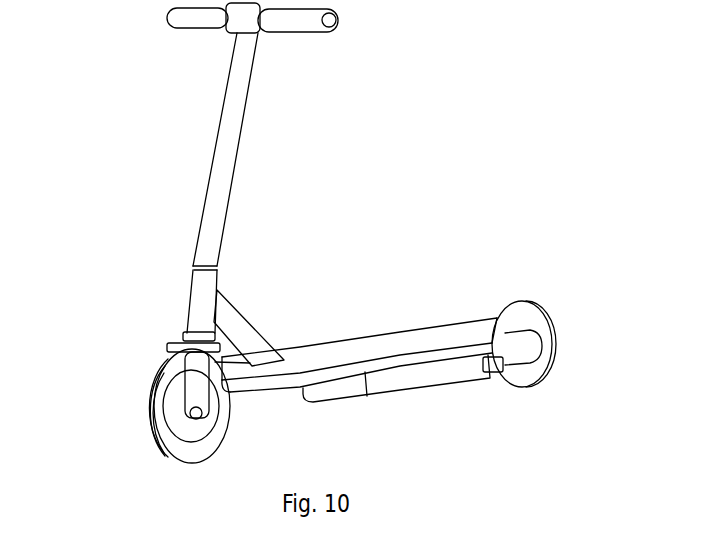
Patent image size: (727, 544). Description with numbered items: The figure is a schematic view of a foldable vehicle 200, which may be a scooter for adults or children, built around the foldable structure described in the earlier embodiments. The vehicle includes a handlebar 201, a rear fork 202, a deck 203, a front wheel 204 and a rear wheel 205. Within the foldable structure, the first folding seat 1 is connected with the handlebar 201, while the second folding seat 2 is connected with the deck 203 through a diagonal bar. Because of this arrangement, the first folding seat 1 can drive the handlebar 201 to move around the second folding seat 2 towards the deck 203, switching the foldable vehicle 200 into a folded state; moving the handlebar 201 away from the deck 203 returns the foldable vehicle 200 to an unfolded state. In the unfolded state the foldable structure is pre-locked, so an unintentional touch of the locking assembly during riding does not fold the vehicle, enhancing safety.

The foldable vehicle 200 is at (118, 133).
The handlebar 201 is at (307, 23).
The first folding seat 1 is at (229, 180).
The second folding seat 2 is at (205, 305).
The rear fork 202 is at (407, 377).
The deck 203 is at (363, 343).
The front wheel 204 is at (150, 400).
The rear wheel 205 is at (507, 310).